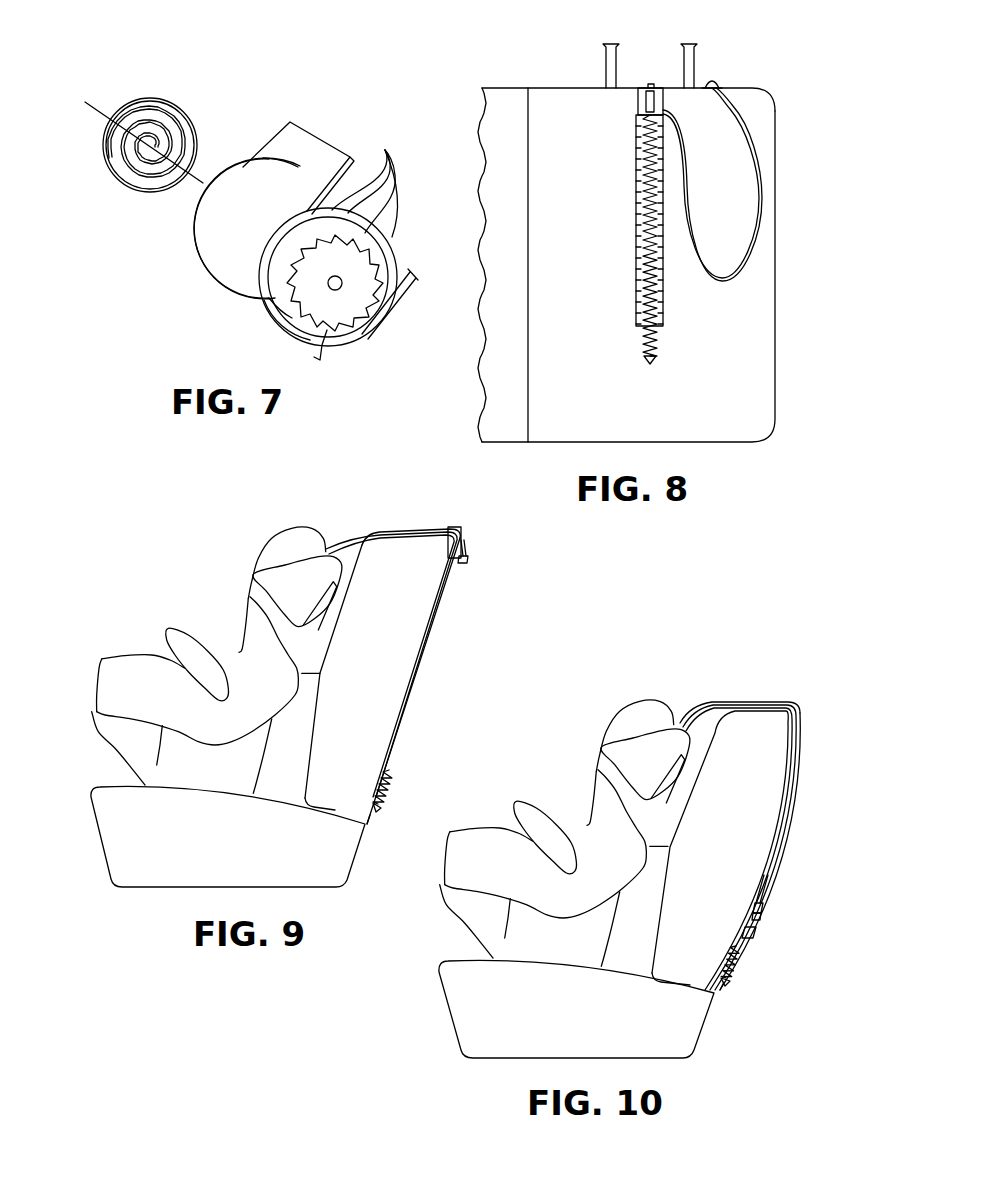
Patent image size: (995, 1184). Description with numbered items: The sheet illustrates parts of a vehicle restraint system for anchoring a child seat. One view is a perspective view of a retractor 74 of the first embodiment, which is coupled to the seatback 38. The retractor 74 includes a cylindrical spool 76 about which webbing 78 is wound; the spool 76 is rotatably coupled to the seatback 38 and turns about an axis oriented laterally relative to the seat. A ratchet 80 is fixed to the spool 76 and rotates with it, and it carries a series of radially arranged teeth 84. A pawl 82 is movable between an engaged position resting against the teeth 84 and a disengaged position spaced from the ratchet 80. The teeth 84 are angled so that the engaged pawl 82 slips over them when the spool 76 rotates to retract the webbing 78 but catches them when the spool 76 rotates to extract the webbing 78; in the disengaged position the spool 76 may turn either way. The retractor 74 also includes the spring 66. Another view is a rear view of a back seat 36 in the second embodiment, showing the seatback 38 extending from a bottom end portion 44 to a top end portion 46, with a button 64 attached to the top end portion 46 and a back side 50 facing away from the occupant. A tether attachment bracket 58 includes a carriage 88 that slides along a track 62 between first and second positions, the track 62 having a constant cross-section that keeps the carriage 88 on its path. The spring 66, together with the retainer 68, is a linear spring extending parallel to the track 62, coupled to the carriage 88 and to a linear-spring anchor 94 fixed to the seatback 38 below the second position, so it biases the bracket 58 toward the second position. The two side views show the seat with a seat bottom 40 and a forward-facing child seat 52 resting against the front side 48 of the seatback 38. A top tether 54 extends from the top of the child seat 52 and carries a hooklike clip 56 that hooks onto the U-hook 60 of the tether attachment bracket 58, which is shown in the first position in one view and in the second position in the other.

In FIG. 8, the back seat 36 is at (775, 338).
In FIG. 9, the back seat 36 is at (162, 891).
In FIG. 10, the back seat 36 is at (508, 1058).
In FIG. 8, the seatback 38 is at (775, 260).
In FIG. 9, the seatback 38 is at (406, 694).
In FIG. 10, the seatback 38 is at (770, 842).
In FIG. 9, the seat bottom 40 is at (97, 838).
In FIG. 10, the seat bottom 40 is at (442, 1010).
In FIG. 8, the bottom end portion 44 is at (775, 418).
In FIG. 9, the bottom end portion 44 is at (373, 818).
In FIG. 10, the bottom end portion 44 is at (718, 991).
In FIG. 8, the top end portion 46 is at (767, 90).
In FIG. 9, the top end portion 46 is at (448, 527).
In FIG. 10, the top end portion 46 is at (789, 703).
In FIG. 9, the front side 48 is at (255, 564).
In FIG. 10, the front side 48 is at (605, 748).
In FIG. 8, the back side 50 is at (562, 252).
In FIG. 9, the back side 50 is at (426, 641).
In FIG. 10, the back side 50 is at (780, 808).
In FIG. 9, the child seat 52 is at (123, 657).
In FIG. 10, the child seat 52 is at (478, 830).
In FIG. 9, the top tether 54 is at (365, 525).
In FIG. 10, the top tether 54 is at (707, 705).
In FIG. 9, the clip 56 is at (459, 528).
In FIG. 10, the clip 56 is at (764, 907).
In FIG. 8, the tether attachment bracket 58 is at (638, 112).
In FIG. 9, the tether attachment bracket 58 is at (467, 543).
In FIG. 9, the U-hook 60 is at (465, 535).
In FIG. 10, the U-hook 60 is at (768, 878).
In FIG. 8, the track 62 is at (638, 166).
In FIG. 9, the track 62 is at (446, 600).
In FIG. 10, the track 62 is at (800, 763).
In FIG. 8, the button 64 is at (712, 78).
In FIG. 7, the spring 66 is at (163, 98).
In FIG. 8, the spring 66 is at (655, 350).
In FIG. 9, the spring 66 is at (394, 775).
In FIG. 10, the spring 66 is at (739, 960).
In FIG. 8, the retainer 68 is at (675, 94).
In FIG. 7, the retractor 74 is at (126, 259).
In FIG. 7, the spool 76 is at (257, 312).
In FIG. 7, the webbing 78 is at (303, 153).
In FIG. 7, the ratchet 80 is at (315, 340).
In FIG. 7, the pawl 82 is at (357, 343).
In FIG. 7, the teeth 84 is at (385, 155).
In FIG. 8, the carriage 88 is at (638, 94).
In FIG. 9, the carriage 88 is at (467, 554).
In FIG. 10, the carriage 88 is at (760, 920).
In FIG. 8, the linear-spring anchor 94 is at (650, 364).
In FIG. 9, the linear-spring anchor 94 is at (377, 808).
In FIG. 10, the linear-spring anchor 94 is at (727, 983).